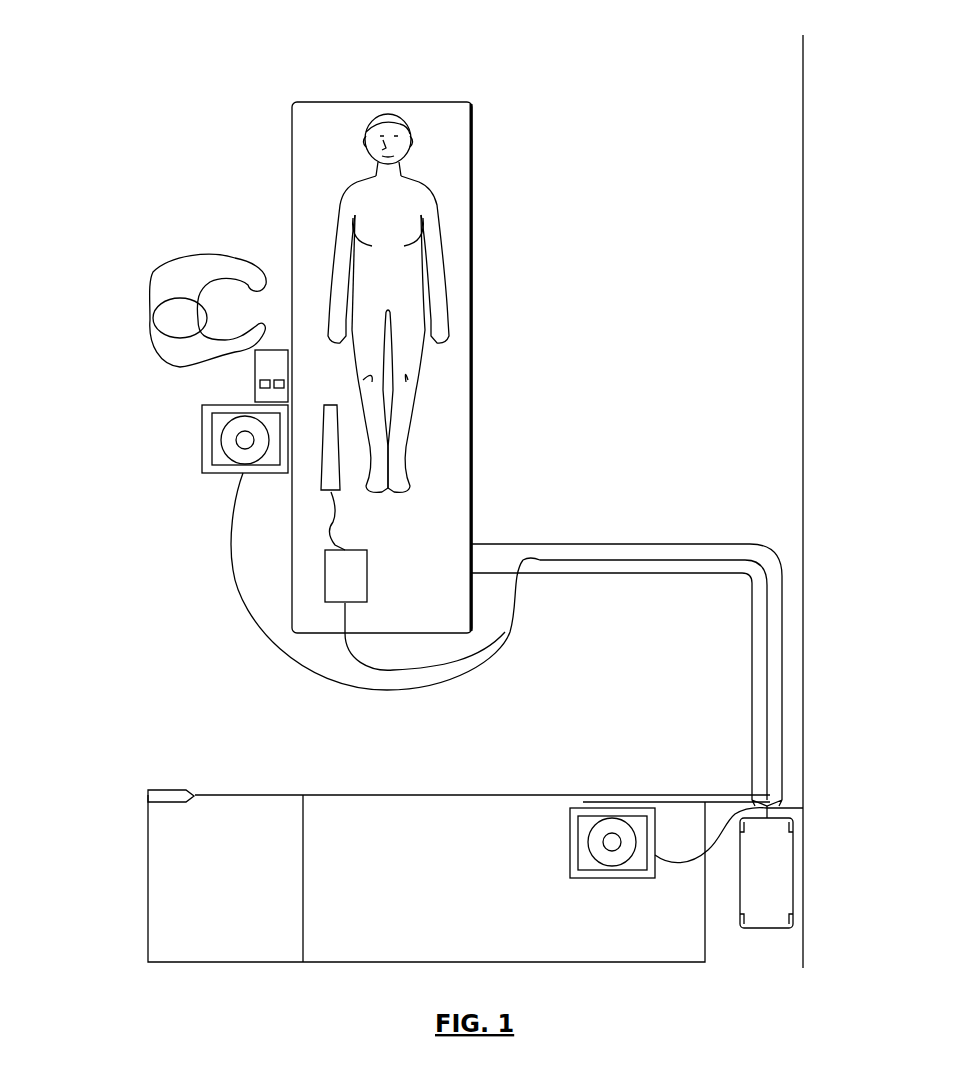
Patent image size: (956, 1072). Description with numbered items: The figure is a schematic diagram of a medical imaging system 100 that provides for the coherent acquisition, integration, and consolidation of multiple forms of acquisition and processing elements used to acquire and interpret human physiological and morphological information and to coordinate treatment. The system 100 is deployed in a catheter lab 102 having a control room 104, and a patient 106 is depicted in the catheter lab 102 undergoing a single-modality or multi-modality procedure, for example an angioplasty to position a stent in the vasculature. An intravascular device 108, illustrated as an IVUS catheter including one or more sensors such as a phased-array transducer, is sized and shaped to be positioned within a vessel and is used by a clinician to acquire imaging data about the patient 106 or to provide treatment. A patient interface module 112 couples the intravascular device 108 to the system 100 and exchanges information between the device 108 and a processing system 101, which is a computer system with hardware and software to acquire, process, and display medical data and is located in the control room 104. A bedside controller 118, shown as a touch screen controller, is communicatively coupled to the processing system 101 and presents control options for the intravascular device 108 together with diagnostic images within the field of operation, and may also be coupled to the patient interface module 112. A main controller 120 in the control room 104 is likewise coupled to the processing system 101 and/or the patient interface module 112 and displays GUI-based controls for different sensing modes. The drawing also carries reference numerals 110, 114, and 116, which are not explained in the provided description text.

The medical imaging system 100 is at (120, 137).
The processing system 101 is at (770, 930).
The catheter lab 102 is at (804, 112).
The control room 104 is at (238, 795).
The patient 106 is at (372, 155).
The intravascular device 108 is at (330, 404).
The input device 110 is at (271, 376).
The patient interface module 112 is at (325, 576).
The patient arm with cuff 114 is at (208, 310).
The cable conduit 116 is at (637, 681).
The bedside controller 118 is at (202, 440).
The main controller 120 is at (570, 850).